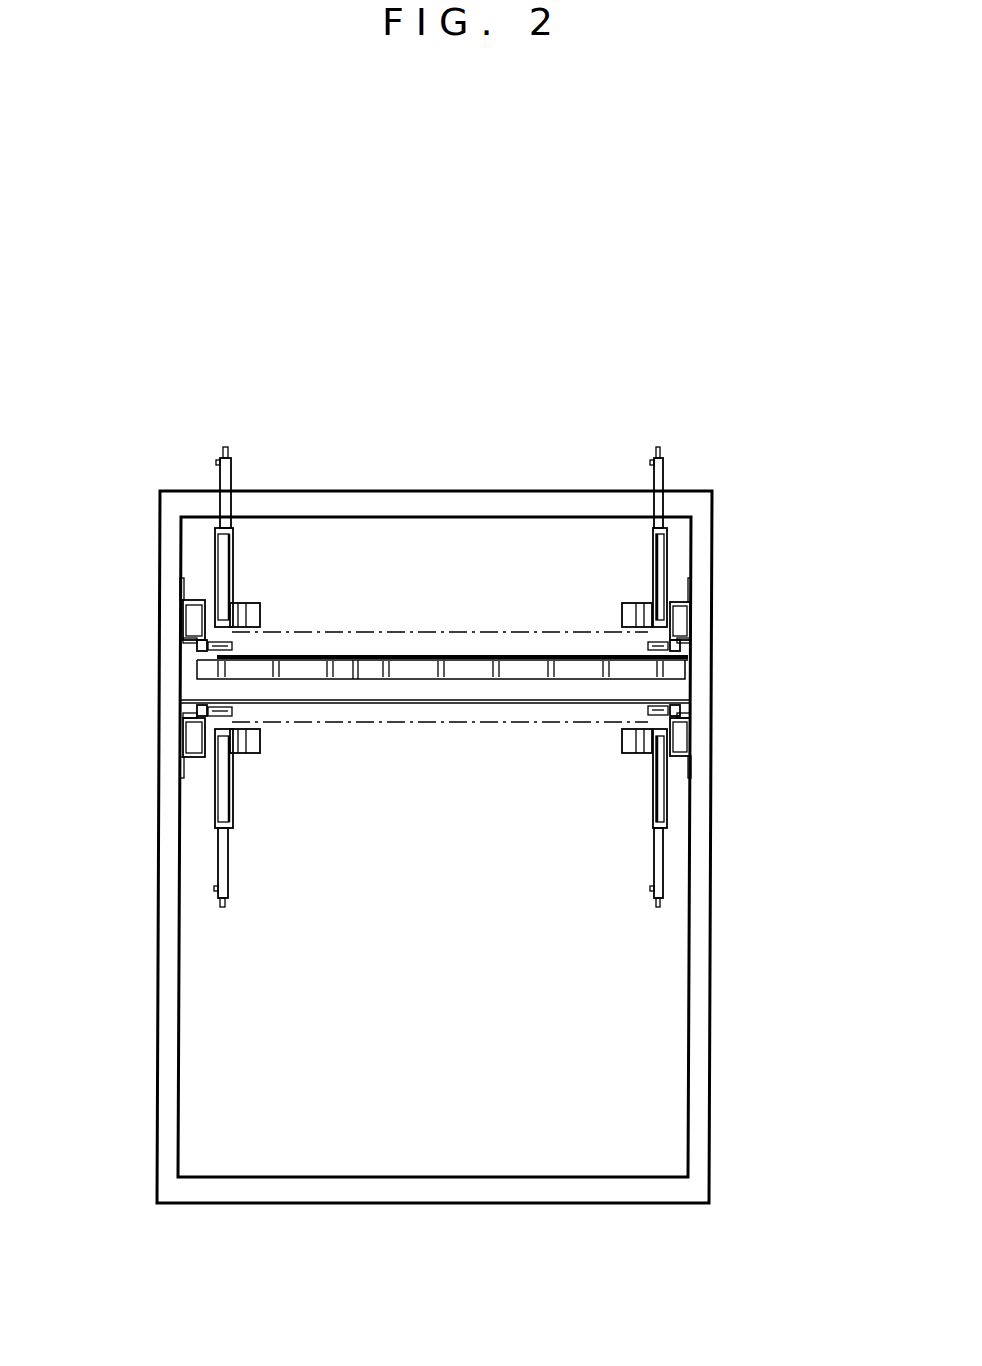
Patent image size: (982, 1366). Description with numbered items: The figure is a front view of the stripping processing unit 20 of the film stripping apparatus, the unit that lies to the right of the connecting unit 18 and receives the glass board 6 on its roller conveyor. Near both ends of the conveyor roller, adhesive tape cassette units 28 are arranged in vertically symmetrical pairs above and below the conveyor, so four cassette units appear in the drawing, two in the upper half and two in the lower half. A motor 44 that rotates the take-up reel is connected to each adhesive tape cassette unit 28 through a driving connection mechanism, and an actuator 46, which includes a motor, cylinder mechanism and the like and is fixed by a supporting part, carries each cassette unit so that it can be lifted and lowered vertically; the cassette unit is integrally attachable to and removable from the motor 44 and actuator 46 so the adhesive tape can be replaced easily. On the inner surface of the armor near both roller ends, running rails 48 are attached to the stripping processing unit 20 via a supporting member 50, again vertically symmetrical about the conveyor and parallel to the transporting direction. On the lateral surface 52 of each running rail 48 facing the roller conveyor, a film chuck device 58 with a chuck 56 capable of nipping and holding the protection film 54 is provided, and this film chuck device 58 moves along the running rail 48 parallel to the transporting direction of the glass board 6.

The stripping processing unit 20 is at (703, 427).
The connecting unit 18 is at (430, 500).
The glass board 6 is at (326, 656).
The protection film 54 is at (440, 640).
The actuator 46 is at (225, 480).
The adhesive tape cassette unit 28 is at (207, 558).
The motor 44 is at (250, 610).
The running rail 48 is at (193, 622).
The supporting member 50 is at (183, 590).
The lateral surface 52 is at (188, 642).
The film chuck device 58 is at (190, 653).
The chuck 56 is at (232, 647).